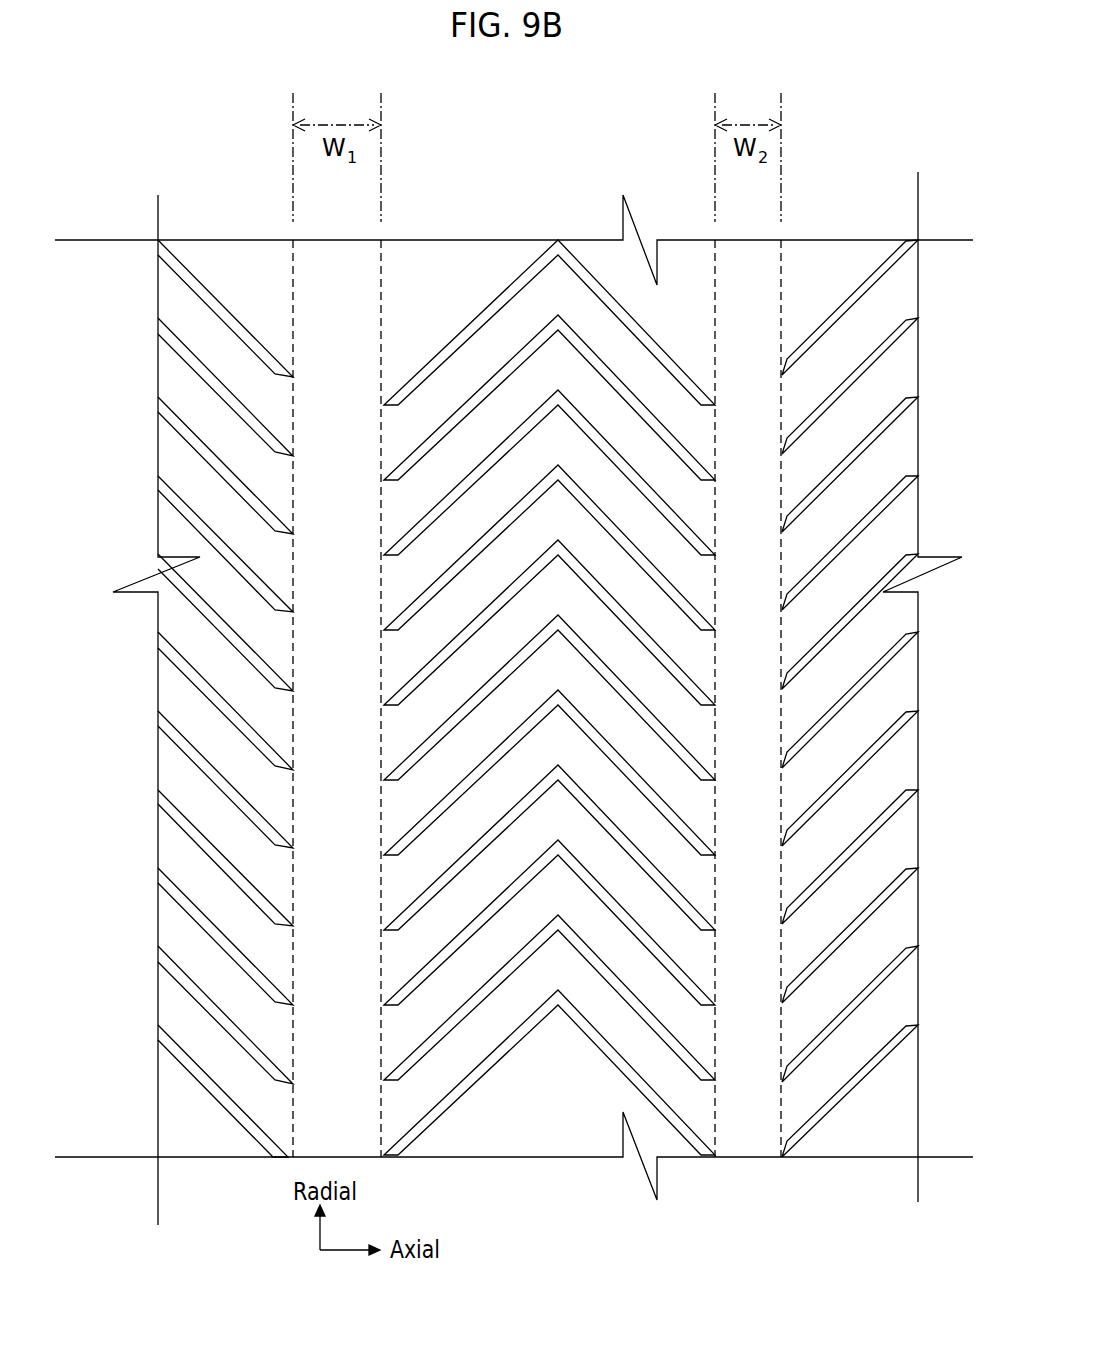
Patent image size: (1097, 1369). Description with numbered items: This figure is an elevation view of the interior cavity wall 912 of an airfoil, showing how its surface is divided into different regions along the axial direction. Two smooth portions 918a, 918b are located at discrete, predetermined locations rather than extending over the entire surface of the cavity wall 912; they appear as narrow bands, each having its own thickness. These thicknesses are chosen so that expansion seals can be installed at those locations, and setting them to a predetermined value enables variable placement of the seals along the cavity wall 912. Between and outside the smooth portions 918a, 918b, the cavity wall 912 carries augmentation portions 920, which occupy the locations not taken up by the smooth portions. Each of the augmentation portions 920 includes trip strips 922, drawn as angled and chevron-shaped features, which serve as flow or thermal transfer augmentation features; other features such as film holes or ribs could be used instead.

The cavity wall 912 is at (133, 223).
The augmentation portions 920 is at (910, 150).
The trip strips 922 is at (197, 290).
The smooth portion 918a is at (369, 604).
The smooth portion 918b is at (779, 604).